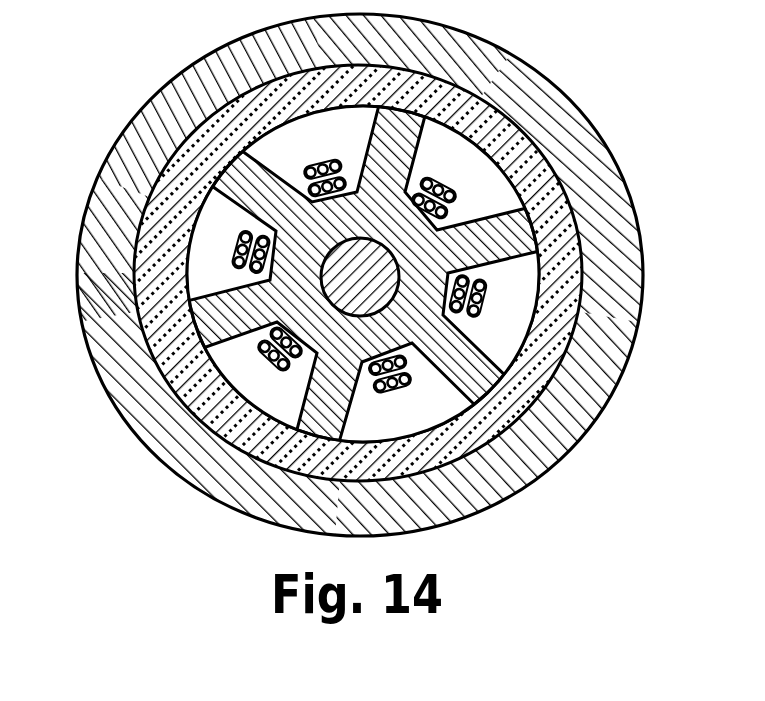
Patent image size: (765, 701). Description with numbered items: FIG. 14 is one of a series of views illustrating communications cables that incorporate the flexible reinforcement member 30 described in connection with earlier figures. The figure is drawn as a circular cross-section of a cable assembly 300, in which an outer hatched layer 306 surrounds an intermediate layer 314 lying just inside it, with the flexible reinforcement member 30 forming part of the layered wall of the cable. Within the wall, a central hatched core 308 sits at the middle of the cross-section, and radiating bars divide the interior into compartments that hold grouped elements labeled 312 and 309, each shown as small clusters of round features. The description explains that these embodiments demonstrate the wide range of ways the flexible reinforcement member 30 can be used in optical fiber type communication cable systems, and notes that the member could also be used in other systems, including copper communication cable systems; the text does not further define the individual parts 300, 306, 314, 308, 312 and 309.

The catheter assembly 300 is at (177, 53).
The outer jacket 306 is at (646, 226).
The flexible reinforcement member 30 is at (166, 176).
The inner tubular member 314 is at (185, 266).
The central core member 308 is at (384, 289).
The lumen set 312 is at (347, 163).
The conductor bundle 309 is at (446, 184).